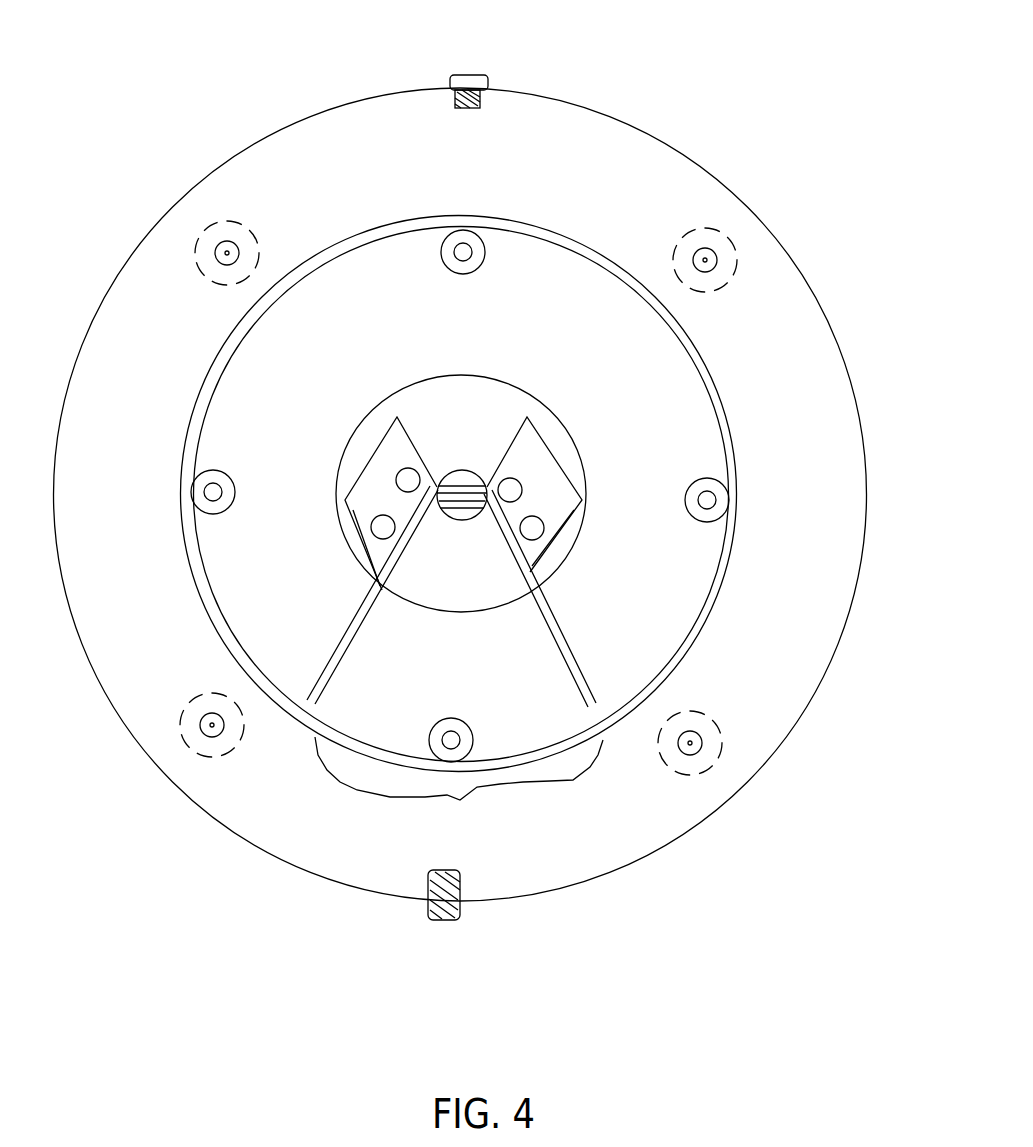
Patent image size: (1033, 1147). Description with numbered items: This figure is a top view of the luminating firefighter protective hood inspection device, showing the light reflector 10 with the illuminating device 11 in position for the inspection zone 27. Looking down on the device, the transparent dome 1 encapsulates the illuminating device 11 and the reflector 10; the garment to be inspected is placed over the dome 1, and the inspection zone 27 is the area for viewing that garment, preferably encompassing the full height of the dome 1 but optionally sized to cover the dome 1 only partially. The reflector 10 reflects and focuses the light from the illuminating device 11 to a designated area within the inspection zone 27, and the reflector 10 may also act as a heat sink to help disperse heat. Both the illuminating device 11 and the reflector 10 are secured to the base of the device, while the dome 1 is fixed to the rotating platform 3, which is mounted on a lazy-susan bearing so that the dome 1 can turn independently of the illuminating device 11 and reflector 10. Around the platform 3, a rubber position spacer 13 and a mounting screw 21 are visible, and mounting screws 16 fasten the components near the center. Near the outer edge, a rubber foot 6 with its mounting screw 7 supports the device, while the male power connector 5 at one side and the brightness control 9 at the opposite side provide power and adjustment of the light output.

The transparent dome 1 is at (705, 630).
The platform 3 is at (817, 643).
The male power connector 5 is at (483, 73).
The rubber foot 6 is at (742, 237).
The mounting screw 7 is at (705, 258).
The brightness control 9 is at (463, 918).
The light reflector 10 is at (567, 625).
The illuminating device 11 is at (461, 518).
The rubber position spacer 13 is at (730, 472).
The mounting screws 16 is at (541, 529).
The mounting screw 21 is at (727, 502).
The inspection zone 27 is at (459, 793).